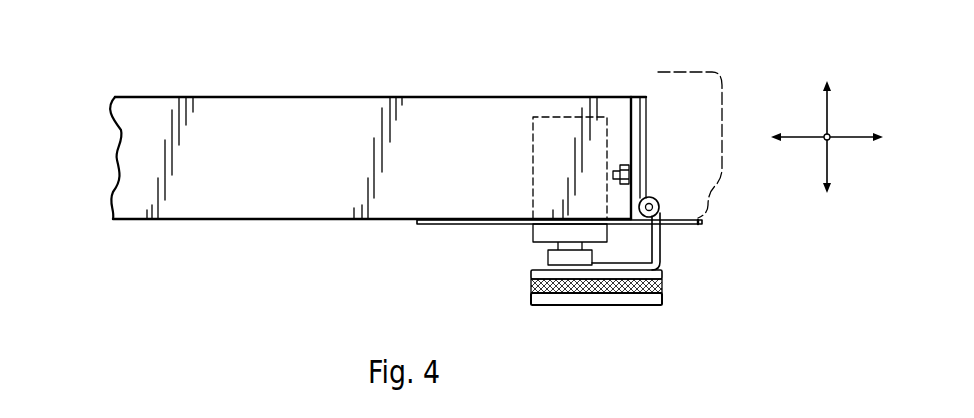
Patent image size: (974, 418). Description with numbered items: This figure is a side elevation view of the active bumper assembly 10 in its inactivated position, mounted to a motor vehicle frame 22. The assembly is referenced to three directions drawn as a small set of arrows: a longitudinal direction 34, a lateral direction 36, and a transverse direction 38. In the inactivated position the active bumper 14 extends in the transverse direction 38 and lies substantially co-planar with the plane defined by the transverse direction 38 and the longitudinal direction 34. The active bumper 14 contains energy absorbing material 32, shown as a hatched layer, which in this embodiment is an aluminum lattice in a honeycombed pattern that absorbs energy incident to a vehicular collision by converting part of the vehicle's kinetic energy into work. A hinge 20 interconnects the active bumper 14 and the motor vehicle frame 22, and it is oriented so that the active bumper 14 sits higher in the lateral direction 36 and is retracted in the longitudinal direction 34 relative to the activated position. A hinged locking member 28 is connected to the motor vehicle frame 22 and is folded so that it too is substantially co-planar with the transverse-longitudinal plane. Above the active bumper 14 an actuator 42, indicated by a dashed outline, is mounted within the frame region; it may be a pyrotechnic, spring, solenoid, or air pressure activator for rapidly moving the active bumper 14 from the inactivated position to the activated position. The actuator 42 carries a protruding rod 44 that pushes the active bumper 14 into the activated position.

The active bumper assembly 10 is at (676, 325).
The active bumper 14 is at (607, 305).
The hinge 20 is at (660, 253).
The motor vehicle frame 22 is at (283, 112).
The hinged locking member 28 is at (703, 226).
The energy absorbing material 32 is at (532, 290).
The longitudinal direction 34 is at (855, 137).
The lateral direction 36 is at (828, 165).
The transverse direction 38 is at (830, 134).
The actuator 42 is at (540, 157).
The protruding rod 44 is at (547, 257).